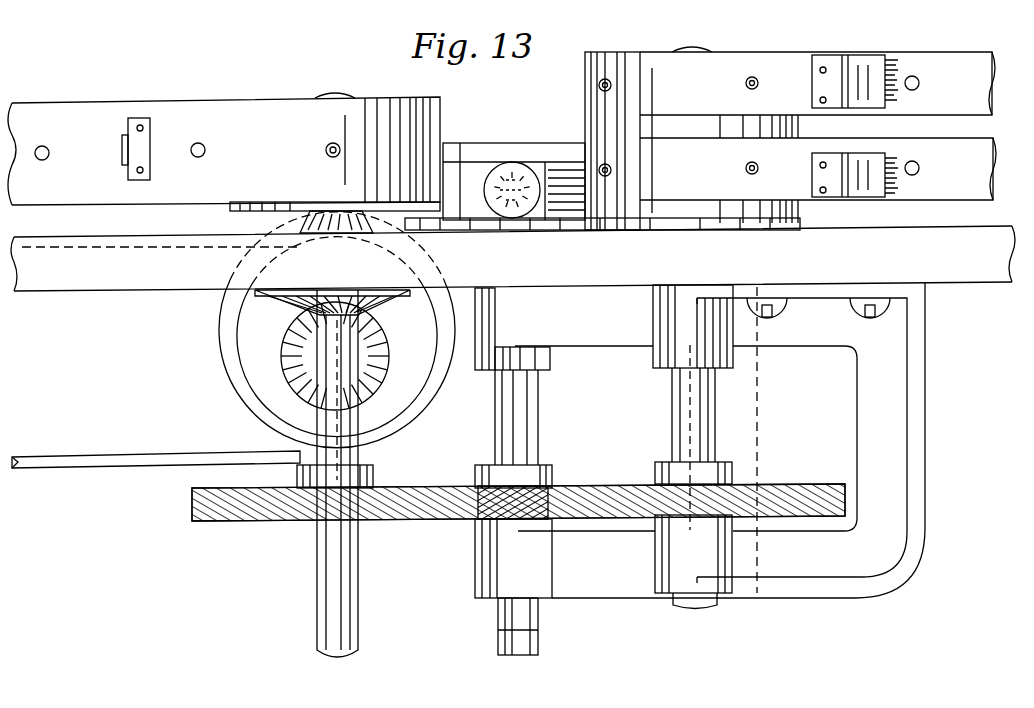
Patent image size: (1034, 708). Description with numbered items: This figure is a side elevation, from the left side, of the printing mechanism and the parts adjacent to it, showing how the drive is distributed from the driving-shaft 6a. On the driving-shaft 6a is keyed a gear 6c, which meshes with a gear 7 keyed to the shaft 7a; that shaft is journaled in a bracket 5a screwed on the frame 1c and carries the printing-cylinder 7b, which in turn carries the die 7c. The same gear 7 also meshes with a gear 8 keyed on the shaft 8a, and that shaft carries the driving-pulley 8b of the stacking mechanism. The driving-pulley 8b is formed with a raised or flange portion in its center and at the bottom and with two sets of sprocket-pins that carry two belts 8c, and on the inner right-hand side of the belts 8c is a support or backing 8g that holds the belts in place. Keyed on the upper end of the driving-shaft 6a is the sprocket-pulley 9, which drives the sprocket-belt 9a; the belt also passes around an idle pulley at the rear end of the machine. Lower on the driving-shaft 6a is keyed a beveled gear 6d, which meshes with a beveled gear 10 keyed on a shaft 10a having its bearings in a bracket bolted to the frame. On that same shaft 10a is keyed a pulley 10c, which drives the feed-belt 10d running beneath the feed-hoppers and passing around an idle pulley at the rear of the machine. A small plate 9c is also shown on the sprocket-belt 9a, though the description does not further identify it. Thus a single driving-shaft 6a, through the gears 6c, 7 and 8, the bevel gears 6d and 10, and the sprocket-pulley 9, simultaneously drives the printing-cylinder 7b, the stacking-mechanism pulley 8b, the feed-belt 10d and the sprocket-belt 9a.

The frame 1c is at (962, 268).
The sprocket-belt 9a is at (218, 112).
The plate 9c is at (142, 147).
The sprocket-pulley 9 is at (267, 205).
The printing-cylinder 7b is at (487, 152).
The die 7c is at (560, 182).
The driving-pulley 8b is at (597, 128).
The belts 8c is at (772, 65).
The support or backing 8g is at (868, 63).
The beveled gear 10 is at (290, 355).
The pulley 10c is at (245, 412).
The shaft 10a is at (333, 357).
The beveled gear 6d is at (277, 308).
The driving-shaft 6a is at (333, 592).
The feed-belt 10d is at (140, 458).
The gear 6c is at (253, 518).
The gear 7 is at (493, 507).
The gear 8 is at (647, 502).
The shaft 7a is at (510, 618).
The bracket 5a is at (603, 335).
The shaft 8a is at (688, 402).